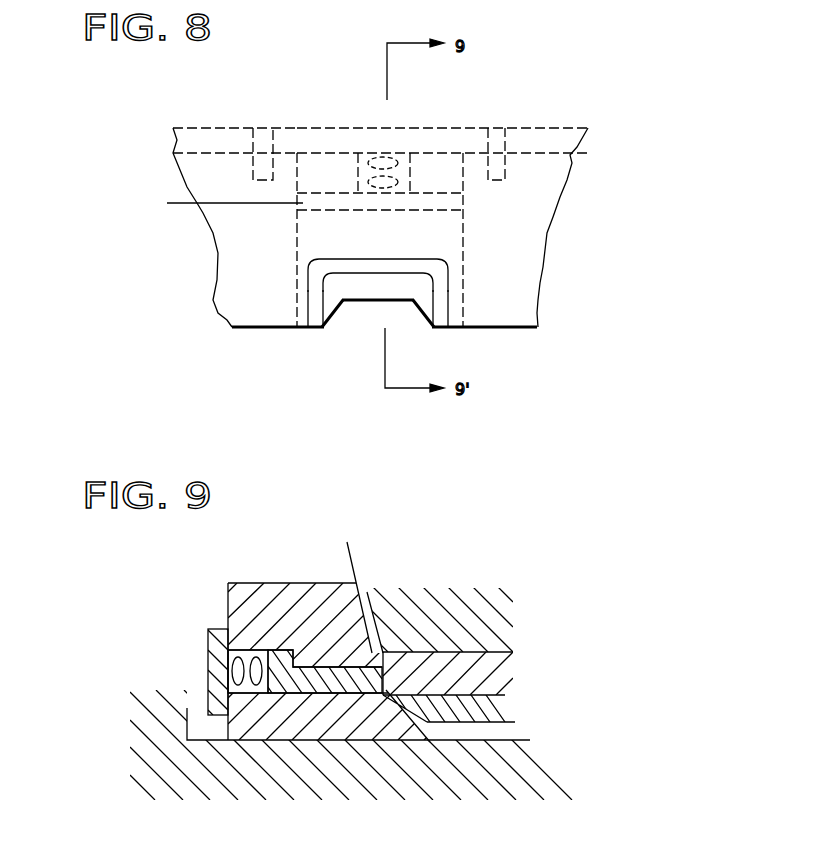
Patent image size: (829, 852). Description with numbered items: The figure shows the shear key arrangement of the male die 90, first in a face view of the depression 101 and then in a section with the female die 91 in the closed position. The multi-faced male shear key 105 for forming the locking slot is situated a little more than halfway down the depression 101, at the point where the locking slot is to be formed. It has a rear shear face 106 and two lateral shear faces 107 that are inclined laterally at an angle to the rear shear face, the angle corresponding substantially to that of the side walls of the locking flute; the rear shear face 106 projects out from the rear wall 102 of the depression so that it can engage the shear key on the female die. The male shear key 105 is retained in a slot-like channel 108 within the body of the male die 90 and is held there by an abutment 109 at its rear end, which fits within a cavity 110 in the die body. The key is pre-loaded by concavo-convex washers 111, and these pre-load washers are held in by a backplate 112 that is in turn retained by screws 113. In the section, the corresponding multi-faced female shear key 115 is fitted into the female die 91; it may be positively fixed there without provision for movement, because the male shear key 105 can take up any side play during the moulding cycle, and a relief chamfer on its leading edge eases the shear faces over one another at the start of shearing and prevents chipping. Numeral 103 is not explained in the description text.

In FIG. 8, the male die 90 is at (268, 240).
In FIG. 9, the male die 90 is at (432, 833).
In FIG. 9, the female die 91 is at (458, 608).
In FIG. 8, the depression 101 is at (370, 318).
In FIG. 8, the rear wall 102 is at (430, 260).
In FIG. 9, the rear wall 102 is at (347, 583).
In FIG. 8, the bracket legs 103 is at (308, 289).
In FIG. 9, the male shear key 105 is at (353, 668).
In FIG. 8, the rear shear face 106 is at (383, 301).
In FIG. 8, the lateral shear faces 107 is at (340, 307).
In FIG. 8, the slot-like channel 108 is at (463, 206).
In FIG. 9, the slot-like channel 108 is at (290, 712).
In FIG. 8, the abutment 109 is at (216, 202).
In FIG. 8, the cavity 110 is at (313, 137).
In FIG. 9, the cavity 110 is at (252, 648).
In FIG. 8, the concavo-convex washers 111 is at (407, 185).
In FIG. 9, the concavo-convex washers 111 is at (231, 663).
In FIG. 8, the backplate 112 is at (192, 137).
In FIG. 9, the backplate 112 is at (215, 681).
In FIG. 8, the screws 113 is at (262, 130).
In FIG. 9, the female shear key 115 is at (507, 673).